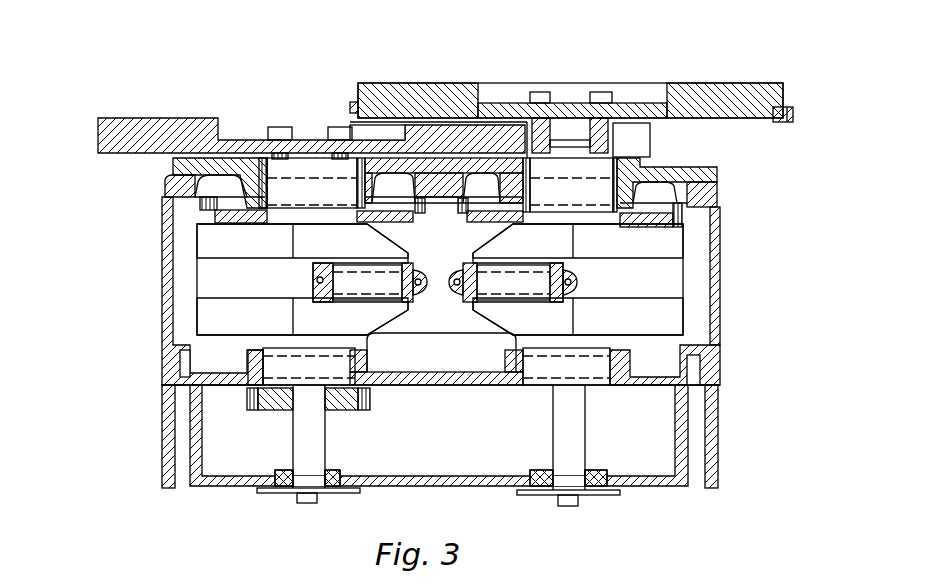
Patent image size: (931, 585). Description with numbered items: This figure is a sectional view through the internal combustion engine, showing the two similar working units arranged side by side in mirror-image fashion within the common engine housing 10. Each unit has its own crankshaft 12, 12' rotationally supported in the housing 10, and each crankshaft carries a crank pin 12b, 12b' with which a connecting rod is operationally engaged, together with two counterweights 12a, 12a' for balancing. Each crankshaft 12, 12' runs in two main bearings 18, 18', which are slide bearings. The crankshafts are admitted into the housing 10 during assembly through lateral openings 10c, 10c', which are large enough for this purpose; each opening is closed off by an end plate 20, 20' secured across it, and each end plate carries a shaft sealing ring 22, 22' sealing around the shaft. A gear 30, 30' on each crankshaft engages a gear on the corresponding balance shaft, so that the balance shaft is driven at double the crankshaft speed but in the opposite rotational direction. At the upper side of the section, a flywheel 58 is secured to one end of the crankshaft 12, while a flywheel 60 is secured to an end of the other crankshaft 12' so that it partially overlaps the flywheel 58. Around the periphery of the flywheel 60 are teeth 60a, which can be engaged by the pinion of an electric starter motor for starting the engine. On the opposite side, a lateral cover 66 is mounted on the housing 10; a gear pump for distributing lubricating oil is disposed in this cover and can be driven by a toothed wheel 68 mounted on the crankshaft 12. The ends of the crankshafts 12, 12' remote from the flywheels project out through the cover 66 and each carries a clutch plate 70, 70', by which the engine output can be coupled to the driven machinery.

The engine housing 10 is at (162, 263).
The lateral opening 10c is at (142, 189).
The lateral opening 10c' is at (742, 194).
The crankshaft 12 is at (307, 291).
The crankshaft 12' is at (569, 291).
The counterweights 12a is at (246, 279).
The counterweights 12a' is at (635, 281).
The crank pin 12b is at (388, 268).
The crank pin 12b' is at (500, 295).
The main bearings 18 is at (327, 244).
The main bearings 18' is at (554, 292).
The end plate 20 is at (191, 189).
The end plate 20' is at (674, 180).
The shaft sealing ring 22 is at (282, 109).
The shaft sealing ring 22' is at (643, 140).
The gear 30 is at (150, 213).
The gear 30' is at (728, 218).
The flywheel 58 is at (160, 128).
The flywheel 60 is at (745, 100).
The teeth 60a is at (786, 125).
The lateral cover 66 is at (722, 472).
The toothed wheel 68 is at (277, 410).
The clutch plate 70 is at (308, 458).
The clutch plate 70' is at (568, 459).